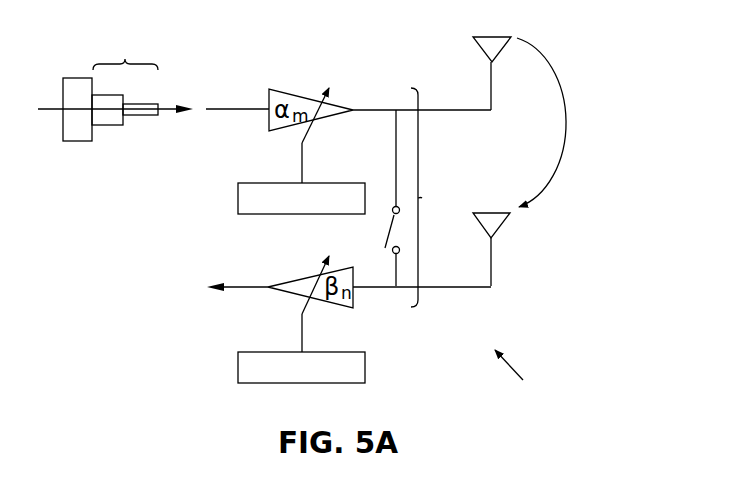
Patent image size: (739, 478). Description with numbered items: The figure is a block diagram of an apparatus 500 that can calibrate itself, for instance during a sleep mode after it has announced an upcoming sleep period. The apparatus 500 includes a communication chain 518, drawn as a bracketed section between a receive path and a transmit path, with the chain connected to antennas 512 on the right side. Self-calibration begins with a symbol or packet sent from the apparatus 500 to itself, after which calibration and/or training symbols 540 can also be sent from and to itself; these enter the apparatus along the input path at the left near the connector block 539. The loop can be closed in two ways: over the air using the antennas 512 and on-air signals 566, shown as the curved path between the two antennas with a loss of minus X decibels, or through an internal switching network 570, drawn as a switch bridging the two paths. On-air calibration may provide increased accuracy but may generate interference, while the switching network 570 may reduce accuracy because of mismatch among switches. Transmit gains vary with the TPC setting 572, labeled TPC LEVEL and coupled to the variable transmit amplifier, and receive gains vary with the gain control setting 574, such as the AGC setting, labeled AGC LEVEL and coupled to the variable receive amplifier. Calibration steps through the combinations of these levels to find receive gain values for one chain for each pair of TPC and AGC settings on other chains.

The apparatus 500 is at (520, 381).
The antennas 512 is at (490, 35).
The communication chain 518 is at (421, 198).
The optical connector 539 is at (77, 77).
The calibration and/or training symbols 540 is at (125, 57).
The on-air signals 566 is at (568, 74).
The internal switching network 570 is at (387, 236).
The TPC setting 572 is at (238, 200).
The gain control setting 574 is at (238, 369).